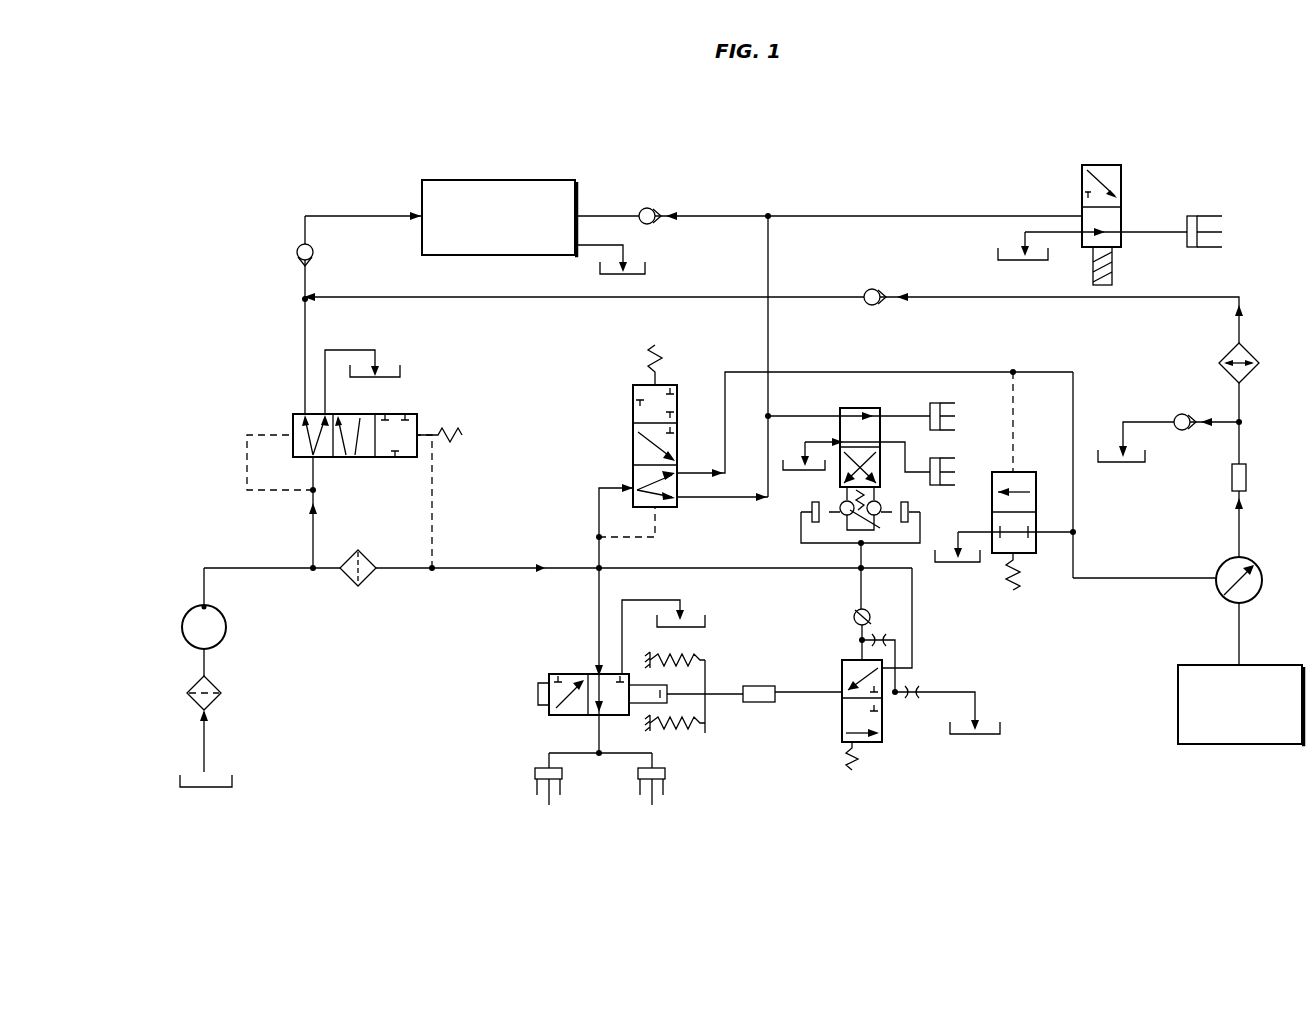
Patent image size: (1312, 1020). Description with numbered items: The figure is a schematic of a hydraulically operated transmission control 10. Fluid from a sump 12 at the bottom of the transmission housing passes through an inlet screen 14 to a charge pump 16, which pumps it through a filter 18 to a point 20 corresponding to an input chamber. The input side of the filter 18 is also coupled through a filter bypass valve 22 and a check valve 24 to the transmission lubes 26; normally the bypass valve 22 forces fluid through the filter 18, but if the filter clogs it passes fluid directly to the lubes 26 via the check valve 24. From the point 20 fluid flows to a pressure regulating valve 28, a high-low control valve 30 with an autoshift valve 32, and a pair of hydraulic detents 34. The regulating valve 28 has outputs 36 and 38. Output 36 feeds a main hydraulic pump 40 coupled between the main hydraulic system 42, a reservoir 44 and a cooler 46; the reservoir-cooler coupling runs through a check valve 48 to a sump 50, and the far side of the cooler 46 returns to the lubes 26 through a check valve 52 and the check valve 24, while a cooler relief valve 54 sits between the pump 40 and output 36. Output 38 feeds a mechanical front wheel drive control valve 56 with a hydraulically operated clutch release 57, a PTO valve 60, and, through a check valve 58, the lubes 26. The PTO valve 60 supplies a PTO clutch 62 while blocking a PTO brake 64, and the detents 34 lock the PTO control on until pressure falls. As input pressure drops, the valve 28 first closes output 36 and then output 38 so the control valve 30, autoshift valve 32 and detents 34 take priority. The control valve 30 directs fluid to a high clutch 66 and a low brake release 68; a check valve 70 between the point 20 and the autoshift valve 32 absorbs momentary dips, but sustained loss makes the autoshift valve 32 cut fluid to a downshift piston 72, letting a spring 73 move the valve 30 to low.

The hydraulically operated transmission control 10 is at (727, 549).
The sump 12 is at (180, 782).
The inlet screen 14 is at (187, 696).
The charge pump 16 is at (182, 627).
The filter 18 is at (360, 583).
The point 20 is at (597, 570).
The filter bypass valve 22 is at (382, 466).
The check valve 24 is at (296, 254).
The transmission lubes 26 is at (492, 179).
The pressure regulating valve 28 is at (630, 427).
The high-low control valve 30 is at (536, 697).
The autoshift valve 32 is at (866, 748).
The hydraulic detents 34 is at (876, 524).
The output 36 is at (738, 371).
The output 38 is at (742, 496).
The main hydraulic pump 40 is at (1222, 599).
The main hydraulic system 42 is at (1178, 714).
The reservoir 44 is at (1230, 490).
The cooler 46 is at (1228, 352).
The check valve 48 is at (1180, 413).
The sump 50 is at (1126, 463).
The check valve 52 is at (871, 288).
The cooler relief valve 54 is at (1028, 560).
The mechanical front wheel drive control valve 56 is at (1103, 158).
The hydraulically operated clutch release 57 is at (1201, 214).
The check valve 58 is at (641, 210).
The PTO valve 60 is at (845, 404).
The PTO clutch 62 is at (930, 406).
The PTO brake 64 is at (942, 486).
The high clutch 66 is at (534, 779).
The low brake release 68 is at (666, 779).
The check valve 70 is at (857, 610).
The downshift piston 72 is at (757, 684).
The spring 73 is at (680, 690).